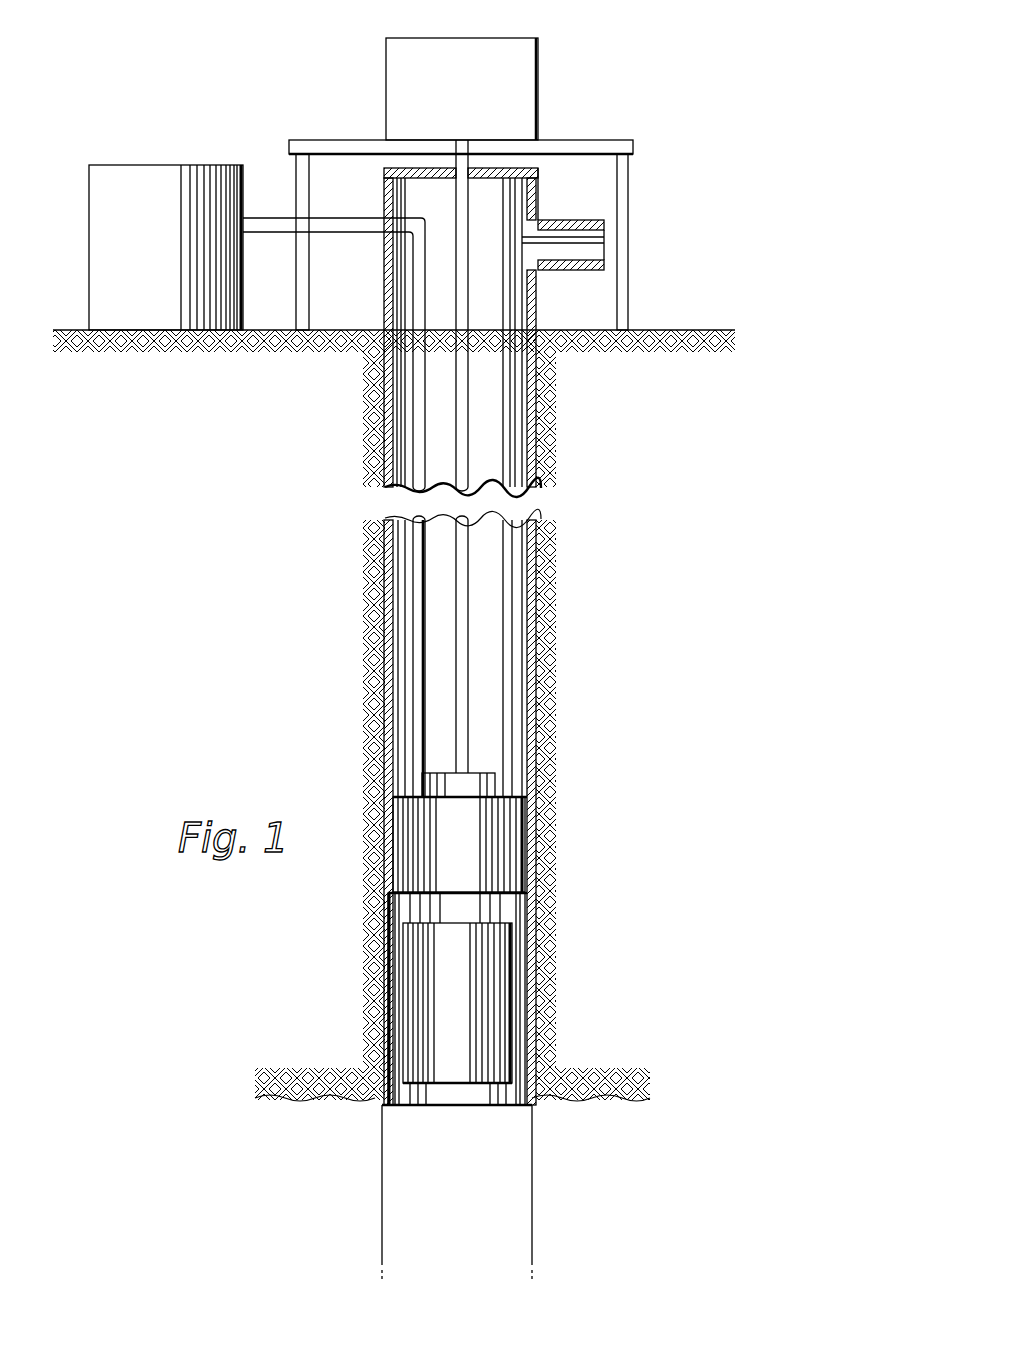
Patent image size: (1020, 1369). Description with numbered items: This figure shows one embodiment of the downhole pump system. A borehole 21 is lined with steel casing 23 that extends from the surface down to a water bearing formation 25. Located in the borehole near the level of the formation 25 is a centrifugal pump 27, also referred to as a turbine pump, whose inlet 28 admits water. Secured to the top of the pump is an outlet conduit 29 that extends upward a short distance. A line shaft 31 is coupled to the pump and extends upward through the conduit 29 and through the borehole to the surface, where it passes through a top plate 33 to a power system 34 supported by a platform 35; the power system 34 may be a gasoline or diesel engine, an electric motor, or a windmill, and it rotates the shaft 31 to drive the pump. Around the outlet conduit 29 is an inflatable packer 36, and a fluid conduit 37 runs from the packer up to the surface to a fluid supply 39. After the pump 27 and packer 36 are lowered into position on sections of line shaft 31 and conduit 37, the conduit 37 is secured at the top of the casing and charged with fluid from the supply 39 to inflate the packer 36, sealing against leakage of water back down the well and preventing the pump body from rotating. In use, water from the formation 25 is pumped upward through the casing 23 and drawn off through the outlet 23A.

The borehole 21 is at (484, 455).
The casing 23 is at (528, 405).
The outlet 23A is at (583, 220).
The water bearing formation 25 is at (636, 1201).
The centrifugal pump 27 is at (458, 980).
The inlet 28 is at (460, 1097).
The outlet conduit 29 is at (485, 773).
The line shaft 31 is at (470, 604).
The top plate 33 is at (538, 195).
The power system 34 is at (386, 64).
The platform 35 is at (355, 140).
The inflatable packer 36 is at (460, 853).
The fluid conduit 37 is at (412, 692).
The fluid supply 39 is at (160, 165).